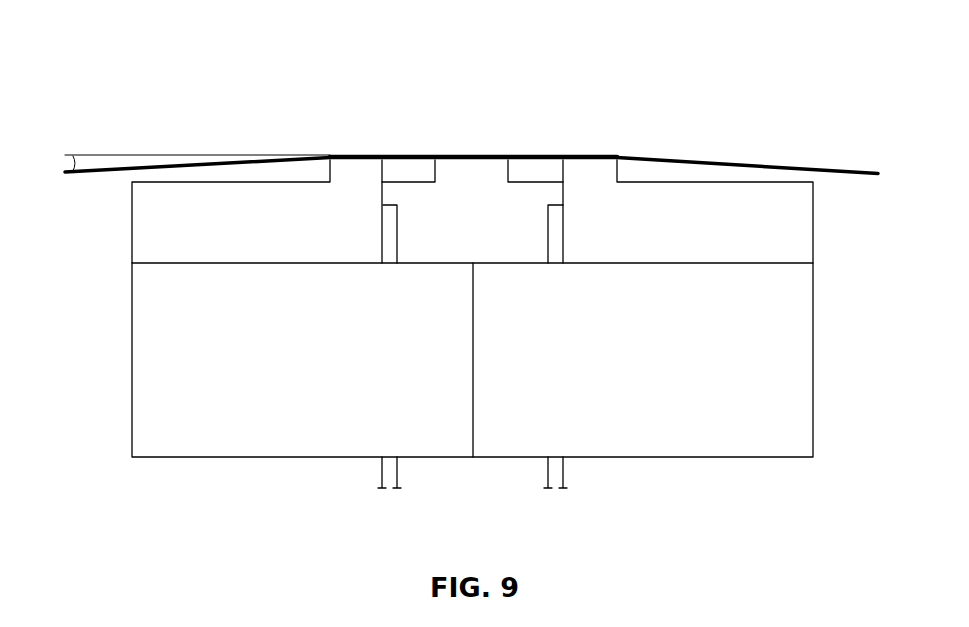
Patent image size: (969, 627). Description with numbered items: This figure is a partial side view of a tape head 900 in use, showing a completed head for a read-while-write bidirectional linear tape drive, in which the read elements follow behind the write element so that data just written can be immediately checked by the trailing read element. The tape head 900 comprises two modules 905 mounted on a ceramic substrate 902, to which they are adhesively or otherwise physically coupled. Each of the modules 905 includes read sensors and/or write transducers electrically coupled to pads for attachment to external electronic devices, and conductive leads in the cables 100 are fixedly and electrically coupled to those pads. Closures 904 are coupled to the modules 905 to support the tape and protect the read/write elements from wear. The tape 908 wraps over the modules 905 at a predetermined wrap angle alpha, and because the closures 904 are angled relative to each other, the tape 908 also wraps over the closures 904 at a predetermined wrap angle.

The tape head 900 is at (144, 106).
The ceramic substrate 902 is at (130, 335).
The closures 904 is at (435, 167).
The modules 905 is at (130, 230).
The tape 908 is at (760, 165).
The cable 100 is at (397, 220).